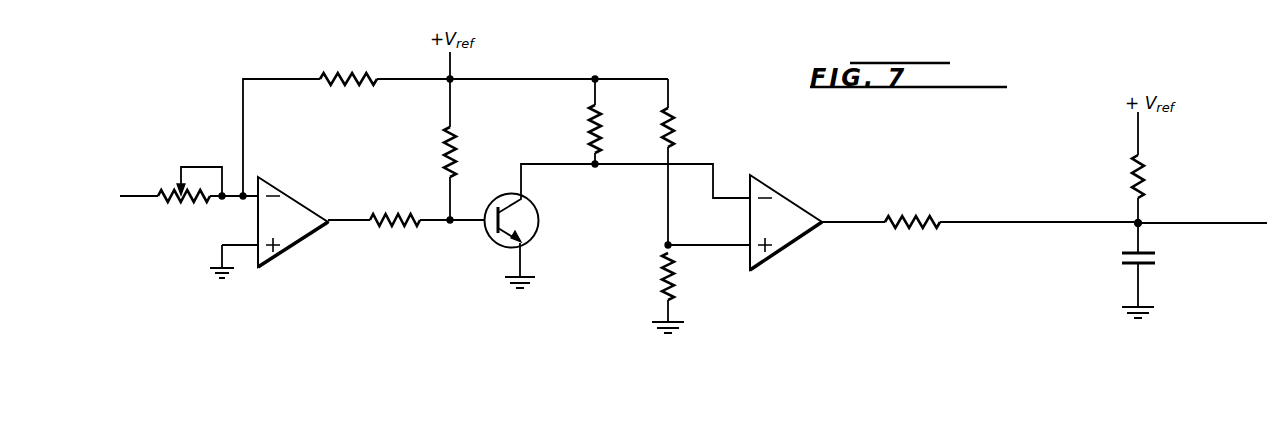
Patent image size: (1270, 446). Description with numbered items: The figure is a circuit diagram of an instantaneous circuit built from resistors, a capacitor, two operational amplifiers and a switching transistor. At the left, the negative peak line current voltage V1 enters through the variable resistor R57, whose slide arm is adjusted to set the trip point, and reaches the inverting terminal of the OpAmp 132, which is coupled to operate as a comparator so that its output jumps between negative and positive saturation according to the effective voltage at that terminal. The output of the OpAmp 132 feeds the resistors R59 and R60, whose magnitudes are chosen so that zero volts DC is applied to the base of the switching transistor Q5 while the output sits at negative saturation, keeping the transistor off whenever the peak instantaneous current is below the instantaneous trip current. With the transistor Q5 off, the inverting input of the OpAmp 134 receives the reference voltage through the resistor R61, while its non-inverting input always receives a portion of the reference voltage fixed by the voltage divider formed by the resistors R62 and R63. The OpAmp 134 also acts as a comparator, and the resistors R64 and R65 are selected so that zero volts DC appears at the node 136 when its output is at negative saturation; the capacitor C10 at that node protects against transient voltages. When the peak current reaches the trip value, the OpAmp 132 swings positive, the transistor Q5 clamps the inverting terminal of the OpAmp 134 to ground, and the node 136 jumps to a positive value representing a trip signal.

The negative peak line current voltage V1 is at (112, 191).
The variable resistor R57 is at (180, 204).
The OpAmp 132 is at (280, 253).
The resistor R59 is at (405, 226).
The resistor R60 is at (444, 152).
The switching transistor Q5 is at (539, 220).
The resistor R61 is at (586, 118).
The resistor R62 is at (672, 134).
The resistor R63 is at (660, 283).
The OpAmp 134 is at (777, 252).
The resistor R64 is at (912, 216).
The resistor R65 is at (1150, 186).
The node 136 is at (1137, 221).
The capacitor C10 is at (1157, 262).